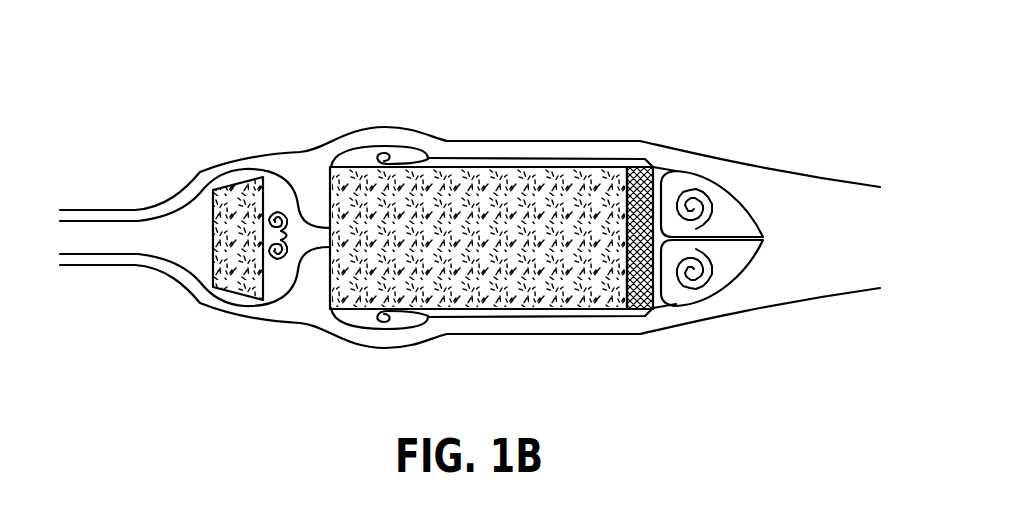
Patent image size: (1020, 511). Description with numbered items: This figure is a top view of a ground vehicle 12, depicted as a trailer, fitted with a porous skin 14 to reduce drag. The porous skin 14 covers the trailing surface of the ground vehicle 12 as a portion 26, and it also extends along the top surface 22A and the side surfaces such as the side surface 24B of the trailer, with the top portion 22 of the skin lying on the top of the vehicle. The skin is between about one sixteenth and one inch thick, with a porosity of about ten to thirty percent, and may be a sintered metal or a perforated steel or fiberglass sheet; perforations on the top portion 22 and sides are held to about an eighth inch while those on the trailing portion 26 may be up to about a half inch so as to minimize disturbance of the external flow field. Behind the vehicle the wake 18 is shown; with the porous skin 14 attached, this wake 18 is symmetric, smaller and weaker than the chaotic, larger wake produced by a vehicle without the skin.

The ground vehicle 12 is at (578, 88).
The porous skin 14 is at (657, 170).
The wake 18 is at (768, 222).
The top portion of porous skin 22 is at (650, 167).
The top surface 22A is at (548, 288).
The side surface 24B is at (447, 165).
The trailing surface portion of porous skin 26 is at (658, 297).